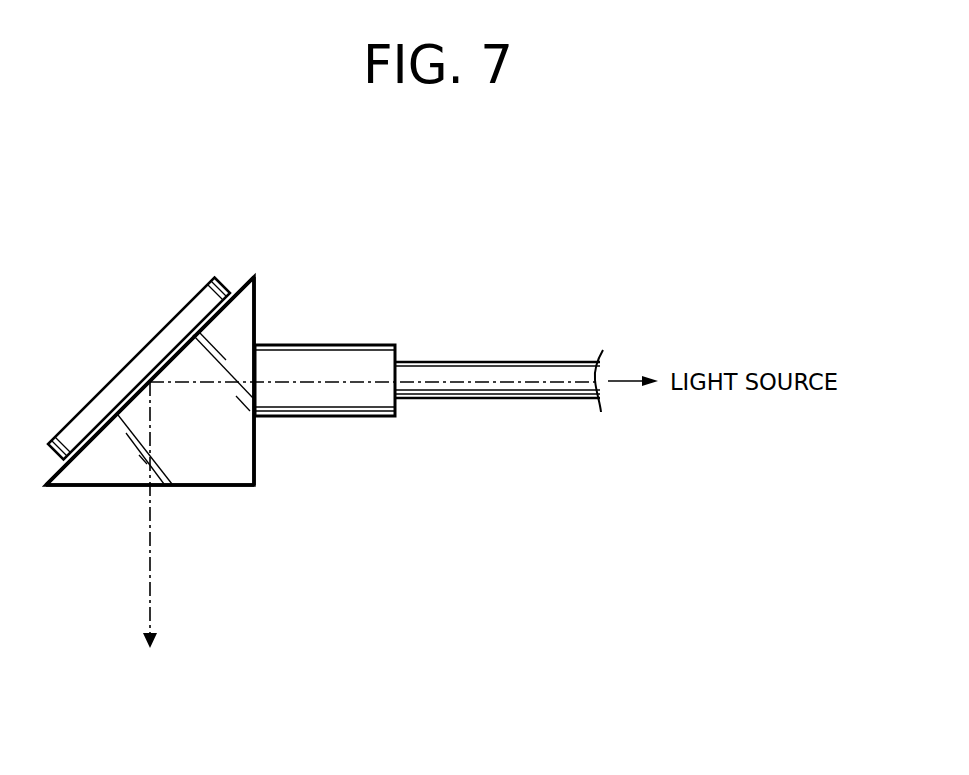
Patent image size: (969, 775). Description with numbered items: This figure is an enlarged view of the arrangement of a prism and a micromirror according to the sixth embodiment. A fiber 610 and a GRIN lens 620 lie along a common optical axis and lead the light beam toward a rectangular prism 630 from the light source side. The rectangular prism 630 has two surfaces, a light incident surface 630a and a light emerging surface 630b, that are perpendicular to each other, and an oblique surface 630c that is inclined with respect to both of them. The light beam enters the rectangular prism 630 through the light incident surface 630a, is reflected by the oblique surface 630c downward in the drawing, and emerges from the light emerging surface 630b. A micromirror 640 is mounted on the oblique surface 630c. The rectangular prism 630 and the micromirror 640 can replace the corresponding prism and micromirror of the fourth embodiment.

The fiber 610 is at (513, 361).
The GRIN lens 620 is at (350, 402).
The rectangular prism 630 is at (237, 463).
The light incident surface 630a is at (255, 310).
The light emerging surface 630b is at (213, 487).
The oblique surface 630c is at (88, 445).
The micromirror 640 is at (157, 347).